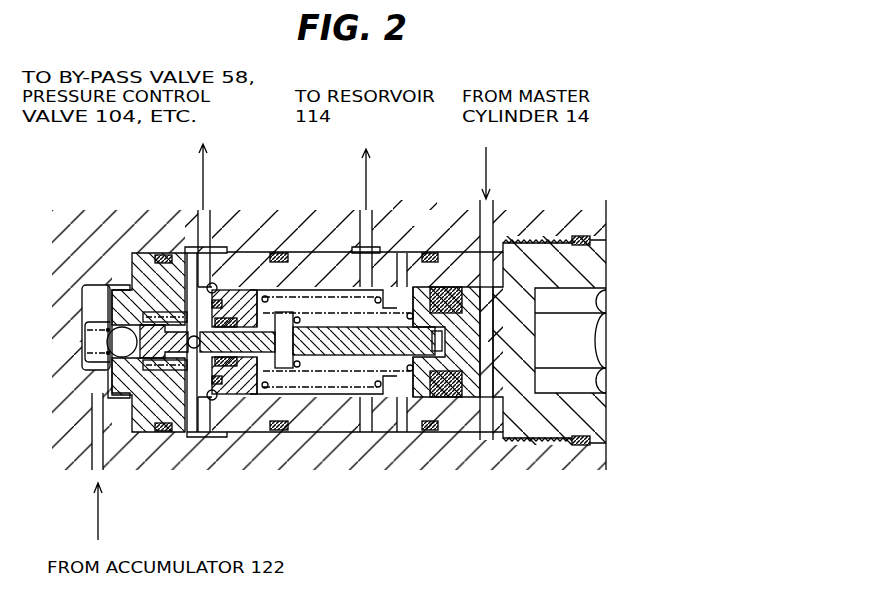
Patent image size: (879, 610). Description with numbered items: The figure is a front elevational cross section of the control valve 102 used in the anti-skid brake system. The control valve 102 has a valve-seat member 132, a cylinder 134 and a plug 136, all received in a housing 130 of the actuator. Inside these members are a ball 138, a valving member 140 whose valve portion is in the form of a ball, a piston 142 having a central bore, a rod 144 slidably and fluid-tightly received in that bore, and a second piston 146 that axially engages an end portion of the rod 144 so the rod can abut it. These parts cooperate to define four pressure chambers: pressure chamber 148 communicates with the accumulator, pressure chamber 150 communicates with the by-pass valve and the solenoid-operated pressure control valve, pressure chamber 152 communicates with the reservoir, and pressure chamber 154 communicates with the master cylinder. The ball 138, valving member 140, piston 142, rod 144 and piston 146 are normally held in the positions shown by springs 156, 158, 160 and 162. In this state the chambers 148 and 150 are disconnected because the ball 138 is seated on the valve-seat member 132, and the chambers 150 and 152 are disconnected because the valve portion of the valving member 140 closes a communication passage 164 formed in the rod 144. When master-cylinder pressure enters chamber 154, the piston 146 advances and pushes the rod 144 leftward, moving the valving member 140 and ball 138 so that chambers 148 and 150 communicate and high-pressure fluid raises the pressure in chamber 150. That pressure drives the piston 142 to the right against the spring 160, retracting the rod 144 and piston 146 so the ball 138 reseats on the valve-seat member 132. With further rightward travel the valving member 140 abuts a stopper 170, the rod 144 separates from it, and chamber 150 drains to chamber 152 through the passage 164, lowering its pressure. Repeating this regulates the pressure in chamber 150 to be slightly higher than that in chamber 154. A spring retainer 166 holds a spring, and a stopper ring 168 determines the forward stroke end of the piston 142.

The control valve 102 is at (70, 223).
The housing 130 is at (433, 226).
The valve-seat member 132 is at (138, 262).
The cylinder 134 is at (298, 270).
The plug 136 is at (533, 253).
The ball 138 is at (118, 352).
The valving member 140 is at (158, 372).
The piston 142 is at (234, 394).
The rod 144 is at (338, 352).
The piston 146 is at (470, 377).
The pressure chamber 148 is at (90, 297).
The pressure chamber 150 is at (207, 285).
The pressure chamber 152 is at (327, 290).
The pressure chamber 154 is at (495, 309).
The spring 156 is at (83, 339).
The spring 158 is at (110, 362).
The spring 160 is at (263, 378).
The spring 162 is at (407, 372).
The communication passage 164 is at (259, 318).
The spring retainer 166 is at (90, 300).
The stopper ring 168 is at (206, 394).
The stopper 170 is at (189, 258).